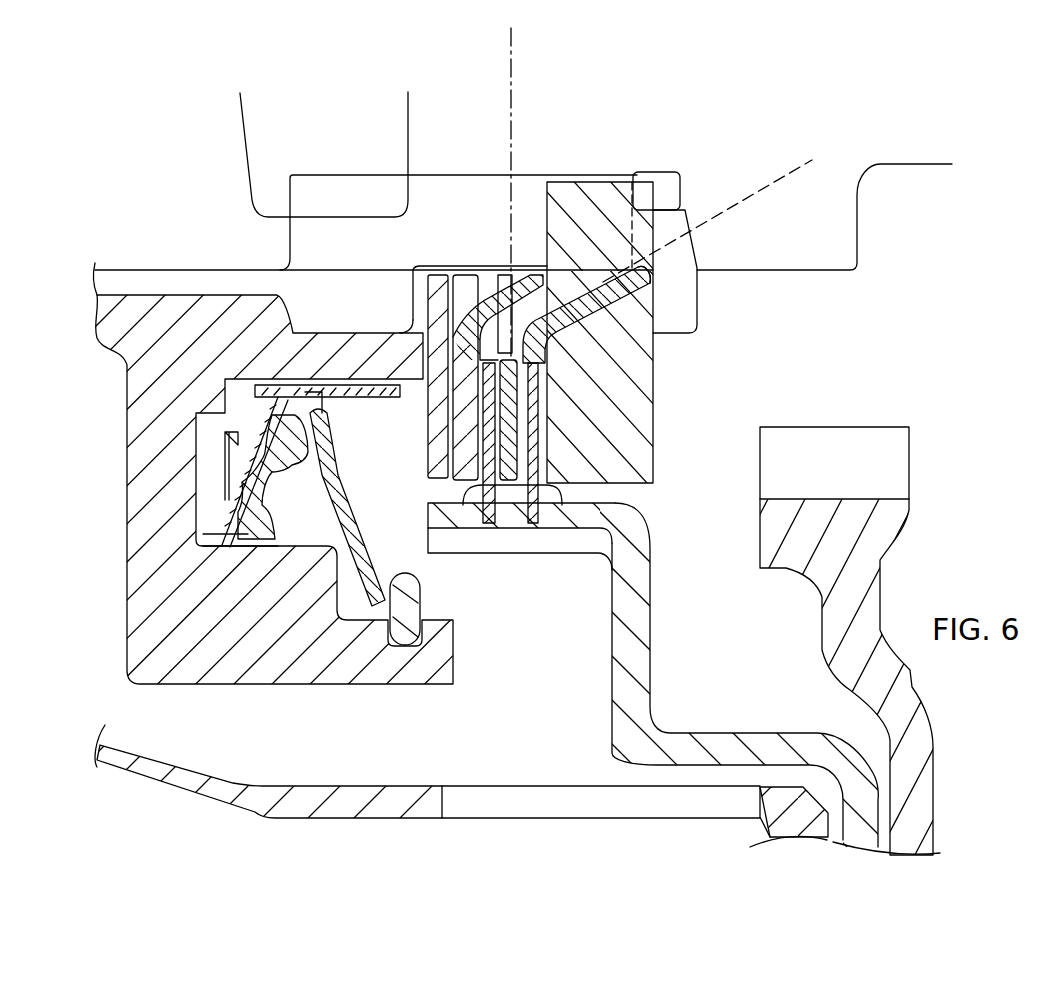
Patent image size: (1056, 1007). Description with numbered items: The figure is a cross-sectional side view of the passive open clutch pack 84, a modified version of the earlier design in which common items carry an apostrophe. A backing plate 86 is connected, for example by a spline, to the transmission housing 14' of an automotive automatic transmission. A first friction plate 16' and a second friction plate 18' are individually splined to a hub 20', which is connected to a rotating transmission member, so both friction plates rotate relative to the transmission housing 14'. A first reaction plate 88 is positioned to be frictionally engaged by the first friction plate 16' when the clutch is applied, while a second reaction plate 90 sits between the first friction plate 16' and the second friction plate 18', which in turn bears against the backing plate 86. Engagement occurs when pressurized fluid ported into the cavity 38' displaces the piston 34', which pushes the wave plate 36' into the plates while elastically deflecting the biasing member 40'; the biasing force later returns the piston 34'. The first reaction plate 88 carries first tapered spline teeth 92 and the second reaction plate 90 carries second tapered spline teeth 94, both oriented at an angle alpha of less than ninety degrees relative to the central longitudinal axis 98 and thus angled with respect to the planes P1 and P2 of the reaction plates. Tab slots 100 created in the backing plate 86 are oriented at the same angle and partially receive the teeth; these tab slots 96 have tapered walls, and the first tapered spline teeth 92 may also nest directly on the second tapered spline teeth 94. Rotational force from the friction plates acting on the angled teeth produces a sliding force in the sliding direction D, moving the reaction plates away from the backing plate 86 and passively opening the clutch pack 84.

The transmission housing 14' is at (523, 181).
The wave plate 36' is at (384, 376).
The first reaction plate 88 is at (463, 380).
The second reaction plate 90 is at (507, 420).
The first tapered spline teeth 92 is at (528, 288).
The second tapered spline teeth 94 is at (573, 293).
The tab slots 96 is at (620, 280).
The backing plate 86 is at (650, 382).
The tab slots 100 is at (605, 290).
The central longitudinal axis 98 is at (540, 383).
The cavity 38' is at (235, 465).
The piston 34' is at (180, 477).
The biasing member 40' is at (334, 507).
The first friction plate 16' is at (528, 503).
The second friction plate 18' is at (520, 576).
The hub 20' is at (528, 503).
The passive open clutch pack 84 is at (832, 108).
The plane of the first reaction plate P1 is at (480, 457).
The plane of the second reaction plate P2 is at (525, 440).
The sliding direction D is at (497, 65).